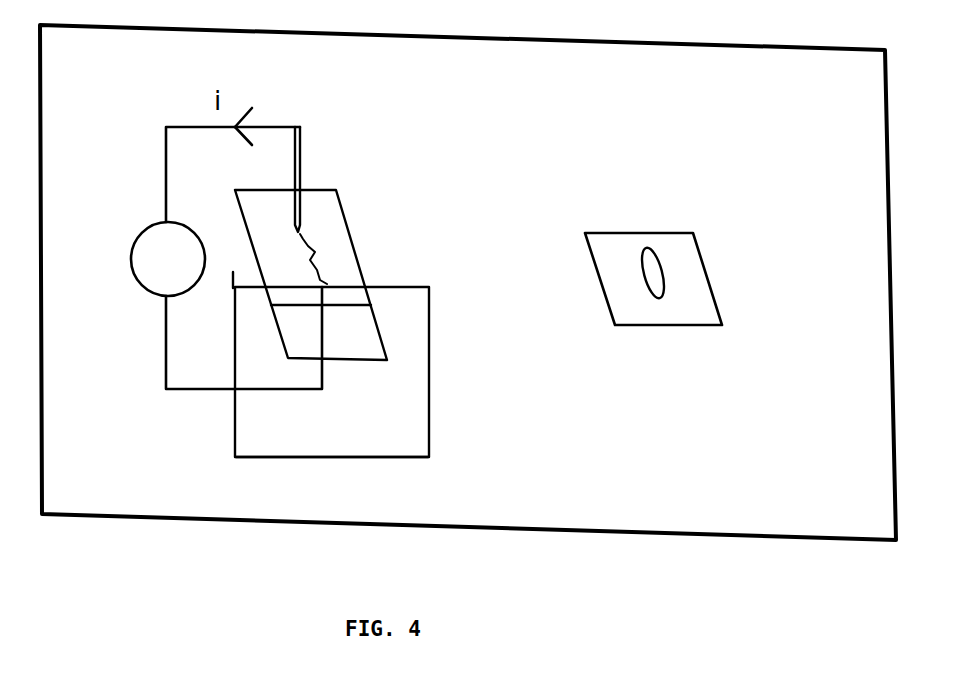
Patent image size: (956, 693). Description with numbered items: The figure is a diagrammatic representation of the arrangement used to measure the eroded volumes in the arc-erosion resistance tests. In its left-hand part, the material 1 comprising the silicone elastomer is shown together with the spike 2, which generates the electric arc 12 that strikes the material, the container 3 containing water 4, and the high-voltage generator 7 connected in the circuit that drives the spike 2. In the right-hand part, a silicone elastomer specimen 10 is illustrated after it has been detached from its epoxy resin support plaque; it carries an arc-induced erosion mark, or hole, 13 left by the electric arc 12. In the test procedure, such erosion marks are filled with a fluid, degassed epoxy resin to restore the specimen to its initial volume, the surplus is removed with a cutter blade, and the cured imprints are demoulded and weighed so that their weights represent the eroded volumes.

The material comprising the silicone elastomer 1 is at (327, 197).
The spike 2 is at (302, 157).
The container 3 is at (285, 453).
The water 4 is at (352, 426).
The high-voltage generator 7 is at (169, 261).
The silicone elastomer specimen 10 is at (676, 252).
The electric arc 12 is at (315, 260).
The arc-induced erosion mark 13 is at (655, 270).